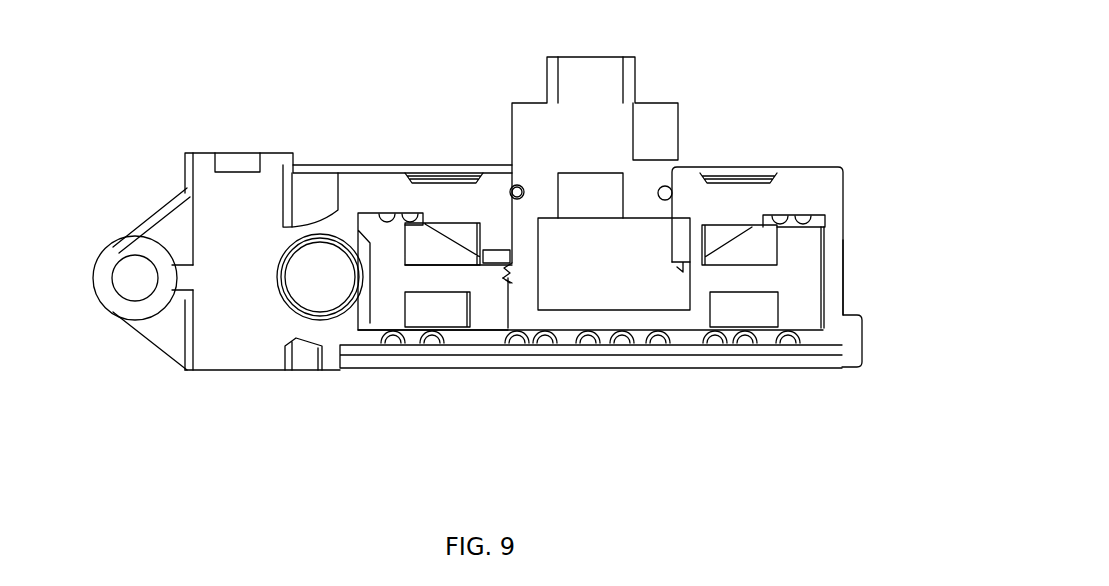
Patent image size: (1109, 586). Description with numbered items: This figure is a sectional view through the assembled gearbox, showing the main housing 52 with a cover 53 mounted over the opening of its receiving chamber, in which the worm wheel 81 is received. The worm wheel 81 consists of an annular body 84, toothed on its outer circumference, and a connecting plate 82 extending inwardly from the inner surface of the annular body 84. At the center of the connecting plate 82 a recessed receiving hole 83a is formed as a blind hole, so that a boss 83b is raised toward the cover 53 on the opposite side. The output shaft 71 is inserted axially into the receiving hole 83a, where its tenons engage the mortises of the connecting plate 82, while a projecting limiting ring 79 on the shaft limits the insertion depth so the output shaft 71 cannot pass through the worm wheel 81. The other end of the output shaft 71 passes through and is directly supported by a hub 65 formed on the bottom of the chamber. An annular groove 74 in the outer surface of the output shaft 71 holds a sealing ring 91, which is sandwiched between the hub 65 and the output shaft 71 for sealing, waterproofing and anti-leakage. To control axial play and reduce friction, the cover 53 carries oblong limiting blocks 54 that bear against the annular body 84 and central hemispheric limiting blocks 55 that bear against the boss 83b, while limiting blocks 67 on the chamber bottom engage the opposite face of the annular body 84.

The main housing 52 is at (733, 197).
The cover 53 is at (580, 355).
The limiting blocks 54 is at (792, 345).
The limiting blocks 55 is at (662, 343).
The hub 65 is at (495, 237).
The limiting blocks 67 is at (793, 220).
The output shaft 71 is at (594, 128).
The annular groove 74 is at (519, 185).
The limiting ring 79 is at (503, 275).
The worm wheel 81 is at (826, 300).
The connecting plate 82 is at (437, 280).
The receiving hole 83a is at (506, 280).
The boss 83b is at (473, 318).
The annular body 84 is at (803, 287).
The sealing ring 91 is at (515, 190).